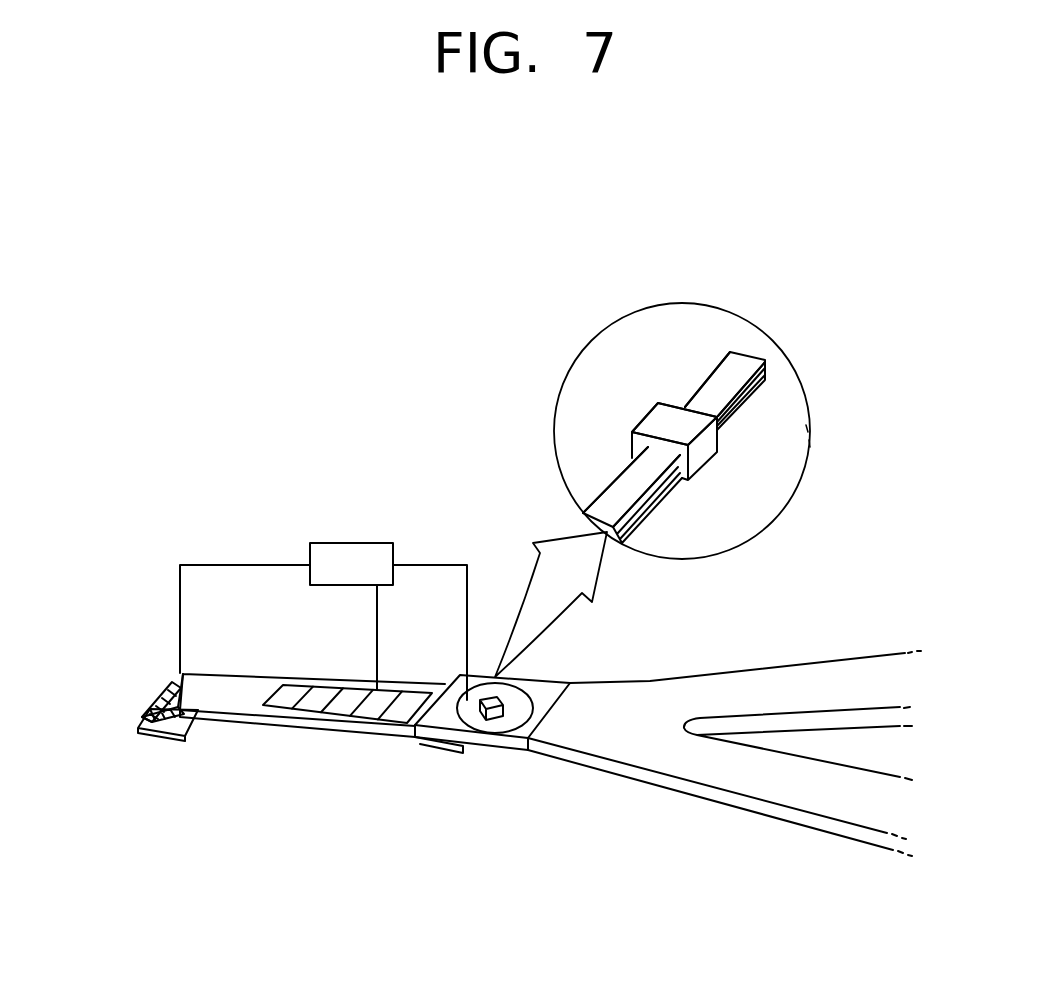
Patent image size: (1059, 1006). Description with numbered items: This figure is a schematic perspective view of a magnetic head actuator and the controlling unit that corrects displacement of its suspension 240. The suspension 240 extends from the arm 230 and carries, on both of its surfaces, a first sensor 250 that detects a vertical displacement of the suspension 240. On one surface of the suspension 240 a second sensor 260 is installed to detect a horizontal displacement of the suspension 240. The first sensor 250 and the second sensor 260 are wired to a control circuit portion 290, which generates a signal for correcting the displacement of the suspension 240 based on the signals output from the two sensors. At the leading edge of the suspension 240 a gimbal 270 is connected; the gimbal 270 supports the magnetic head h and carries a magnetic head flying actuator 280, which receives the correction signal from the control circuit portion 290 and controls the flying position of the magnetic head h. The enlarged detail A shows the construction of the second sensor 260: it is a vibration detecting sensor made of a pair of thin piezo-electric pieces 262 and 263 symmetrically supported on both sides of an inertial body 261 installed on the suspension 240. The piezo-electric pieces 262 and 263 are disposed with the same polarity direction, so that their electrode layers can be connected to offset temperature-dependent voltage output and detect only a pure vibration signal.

The arm 230 is at (712, 770).
The suspension 240 is at (213, 683).
The first sensor 250 is at (318, 690).
The second sensor 260 is at (492, 722).
The inertial body 261 is at (656, 423).
The piezo-electric piece 262 is at (628, 497).
The piezo-electric piece 263 is at (722, 380).
The gimbal 270 is at (150, 700).
The magnetic head flying actuator 280 is at (160, 692).
The control circuit portion 290 is at (358, 550).
The magnetic head h is at (160, 735).
The detail region A is at (533, 684).